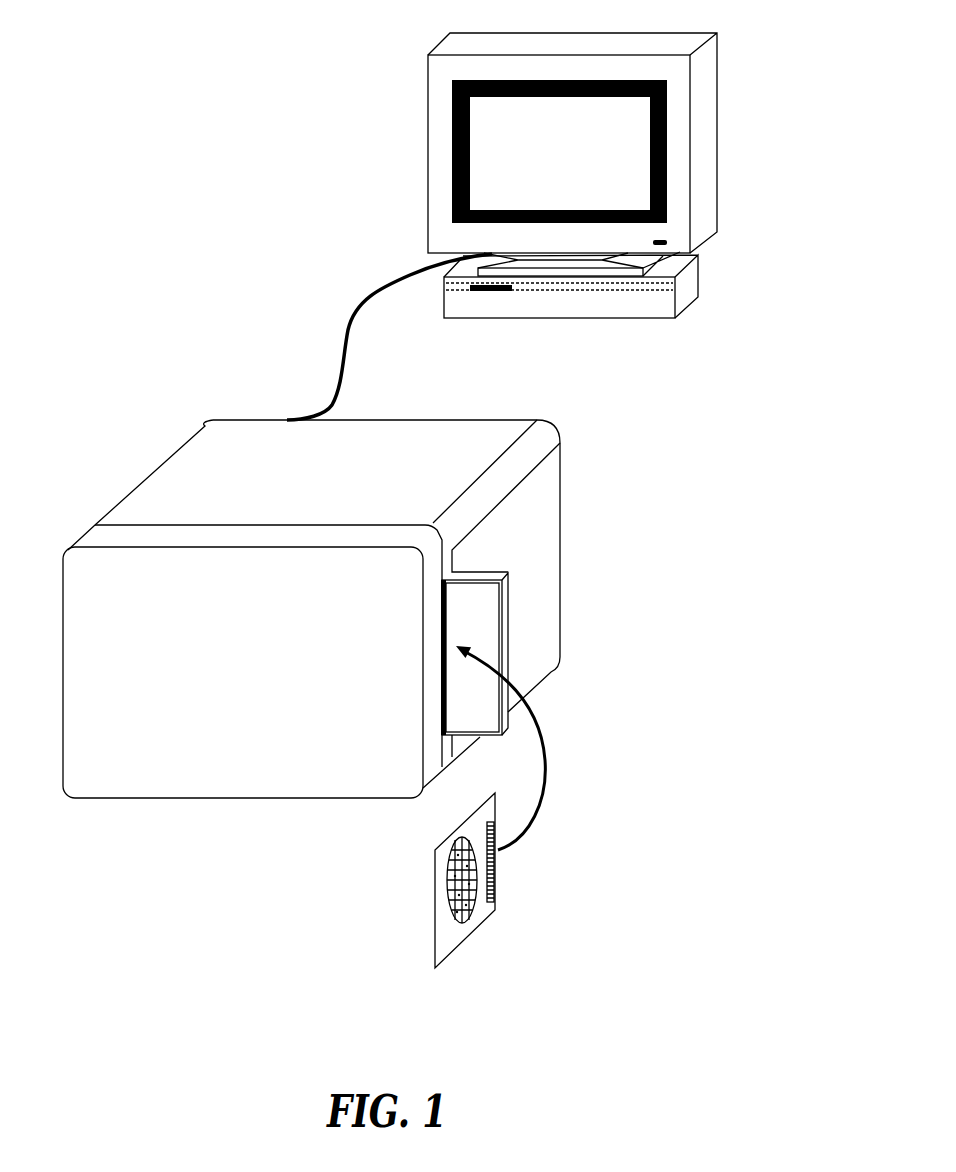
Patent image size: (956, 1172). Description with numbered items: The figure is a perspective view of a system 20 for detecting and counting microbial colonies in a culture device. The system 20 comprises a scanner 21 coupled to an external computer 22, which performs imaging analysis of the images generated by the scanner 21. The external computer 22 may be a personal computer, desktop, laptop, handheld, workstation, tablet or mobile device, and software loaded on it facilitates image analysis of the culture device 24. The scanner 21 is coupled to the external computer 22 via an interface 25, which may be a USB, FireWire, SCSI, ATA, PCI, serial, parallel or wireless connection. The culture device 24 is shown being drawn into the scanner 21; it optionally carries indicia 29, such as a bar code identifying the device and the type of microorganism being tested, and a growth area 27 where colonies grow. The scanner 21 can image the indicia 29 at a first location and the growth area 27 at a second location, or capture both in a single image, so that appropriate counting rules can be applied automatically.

The system 20 is at (158, 289).
The scanner 21 is at (540, 515).
The external computer 22 is at (427, 132).
The culture device 24 is at (480, 960).
The interface 25 is at (349, 313).
The growth area 27 is at (448, 895).
The indicia 29 is at (493, 887).